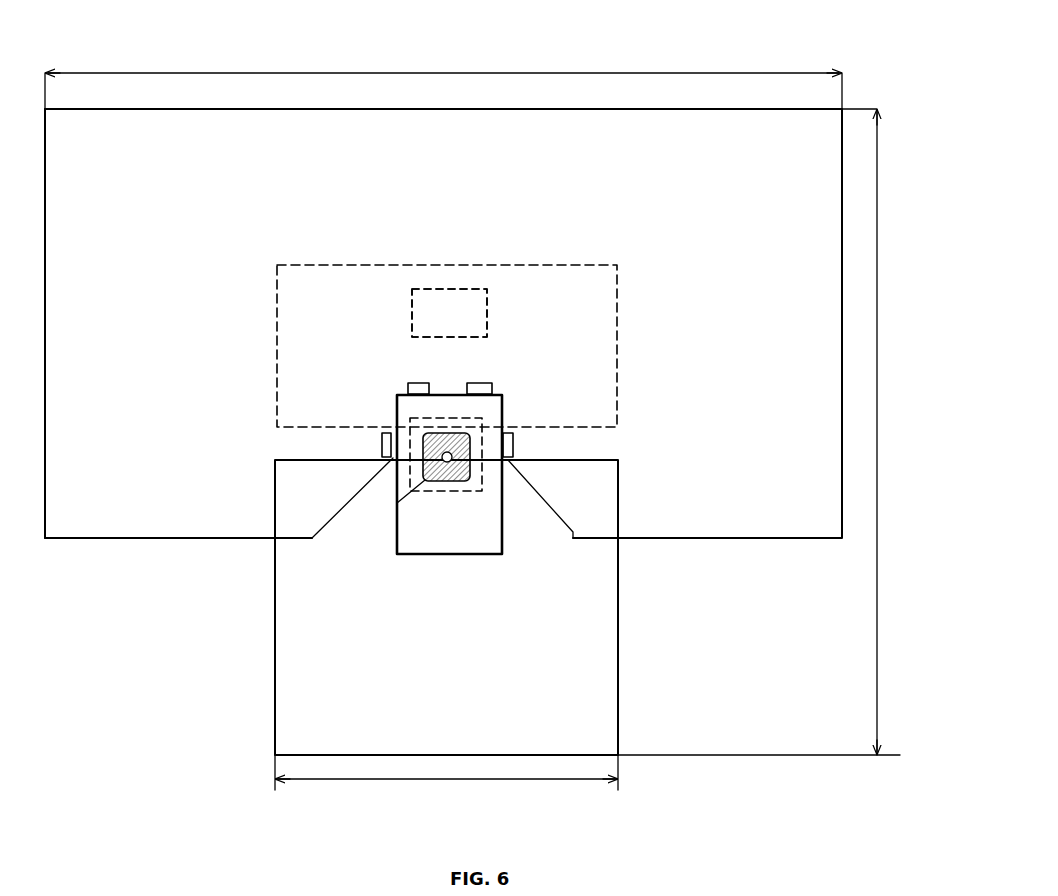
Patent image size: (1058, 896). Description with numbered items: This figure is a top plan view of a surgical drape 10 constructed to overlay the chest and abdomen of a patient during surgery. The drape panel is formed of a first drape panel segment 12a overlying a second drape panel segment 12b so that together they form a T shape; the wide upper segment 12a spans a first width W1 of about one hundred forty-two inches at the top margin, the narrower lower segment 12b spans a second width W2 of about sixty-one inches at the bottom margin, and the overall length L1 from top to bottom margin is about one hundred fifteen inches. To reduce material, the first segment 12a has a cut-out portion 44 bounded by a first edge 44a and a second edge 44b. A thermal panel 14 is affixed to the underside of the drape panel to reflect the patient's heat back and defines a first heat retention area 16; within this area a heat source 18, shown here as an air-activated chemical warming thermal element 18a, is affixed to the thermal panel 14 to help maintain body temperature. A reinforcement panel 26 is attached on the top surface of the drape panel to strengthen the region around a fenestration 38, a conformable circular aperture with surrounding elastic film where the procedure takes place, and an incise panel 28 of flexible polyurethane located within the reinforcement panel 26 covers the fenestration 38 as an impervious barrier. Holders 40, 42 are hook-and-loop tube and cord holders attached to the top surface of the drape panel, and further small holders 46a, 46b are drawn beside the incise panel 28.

The surgical drape 10 is at (150, 650).
The first drape panel segment 12a is at (645, 108).
The second drape panel segment 12b is at (583, 757).
The thermal panel 14 is at (617, 265).
The first heat retention area 16 is at (320, 302).
The heat source 18 is at (465, 290).
The thermal element 18a is at (449, 313).
The reinforcement panel 26 is at (423, 543).
The incise panel 28 is at (397, 503).
The fenestration 38 is at (450, 457).
The holder 40 is at (416, 383).
The holder 42 is at (482, 383).
The cut-out portion 44 is at (337, 582).
The first edge 44a is at (336, 519).
The second edge 44b is at (573, 532).
The first connector 46a is at (378, 443).
The second connector 46b is at (520, 443).
The first width W1 is at (440, 73).
The second width W2 is at (345, 780).
The overall length L1 is at (877, 442).